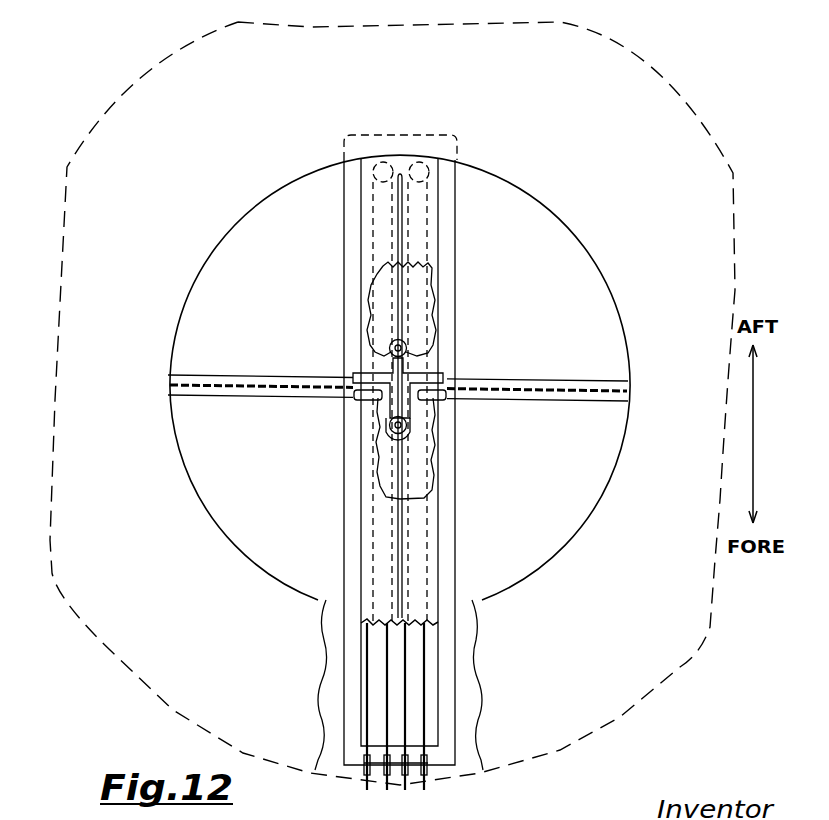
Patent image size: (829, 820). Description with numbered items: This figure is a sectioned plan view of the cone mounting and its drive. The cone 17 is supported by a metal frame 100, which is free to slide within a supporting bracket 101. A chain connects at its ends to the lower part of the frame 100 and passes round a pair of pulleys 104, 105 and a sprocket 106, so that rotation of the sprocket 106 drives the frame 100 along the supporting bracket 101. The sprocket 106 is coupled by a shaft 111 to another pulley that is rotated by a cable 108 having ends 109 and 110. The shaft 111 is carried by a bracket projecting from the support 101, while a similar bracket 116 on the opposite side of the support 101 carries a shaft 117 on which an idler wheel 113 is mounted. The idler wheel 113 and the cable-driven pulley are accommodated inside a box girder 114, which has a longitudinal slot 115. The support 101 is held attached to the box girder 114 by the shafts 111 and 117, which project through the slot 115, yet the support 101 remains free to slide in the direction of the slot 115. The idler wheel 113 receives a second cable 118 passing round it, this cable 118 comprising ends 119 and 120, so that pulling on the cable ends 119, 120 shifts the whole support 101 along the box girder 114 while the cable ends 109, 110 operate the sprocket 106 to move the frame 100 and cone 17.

The cone 17 is at (663, 471).
The metal frame 100 is at (540, 381).
The supporting bracket 101 is at (445, 378).
The pulley 104 is at (372, 402).
The pulley 105 is at (446, 397).
The sprocket 106 is at (390, 430).
The cable 108 is at (390, 477).
The end of cable 109 is at (387, 673).
The end of cable 110 is at (406, 707).
The shaft 111 is at (410, 428).
The idler wheel 113 is at (407, 350).
The box girder 114 is at (367, 253).
The longitudinal slot 115 is at (398, 215).
The bracket 116 is at (389, 366).
The shaft 117 is at (404, 343).
The cable 118 is at (412, 243).
The end of cable 119 is at (368, 670).
The end of cable 120 is at (425, 672).